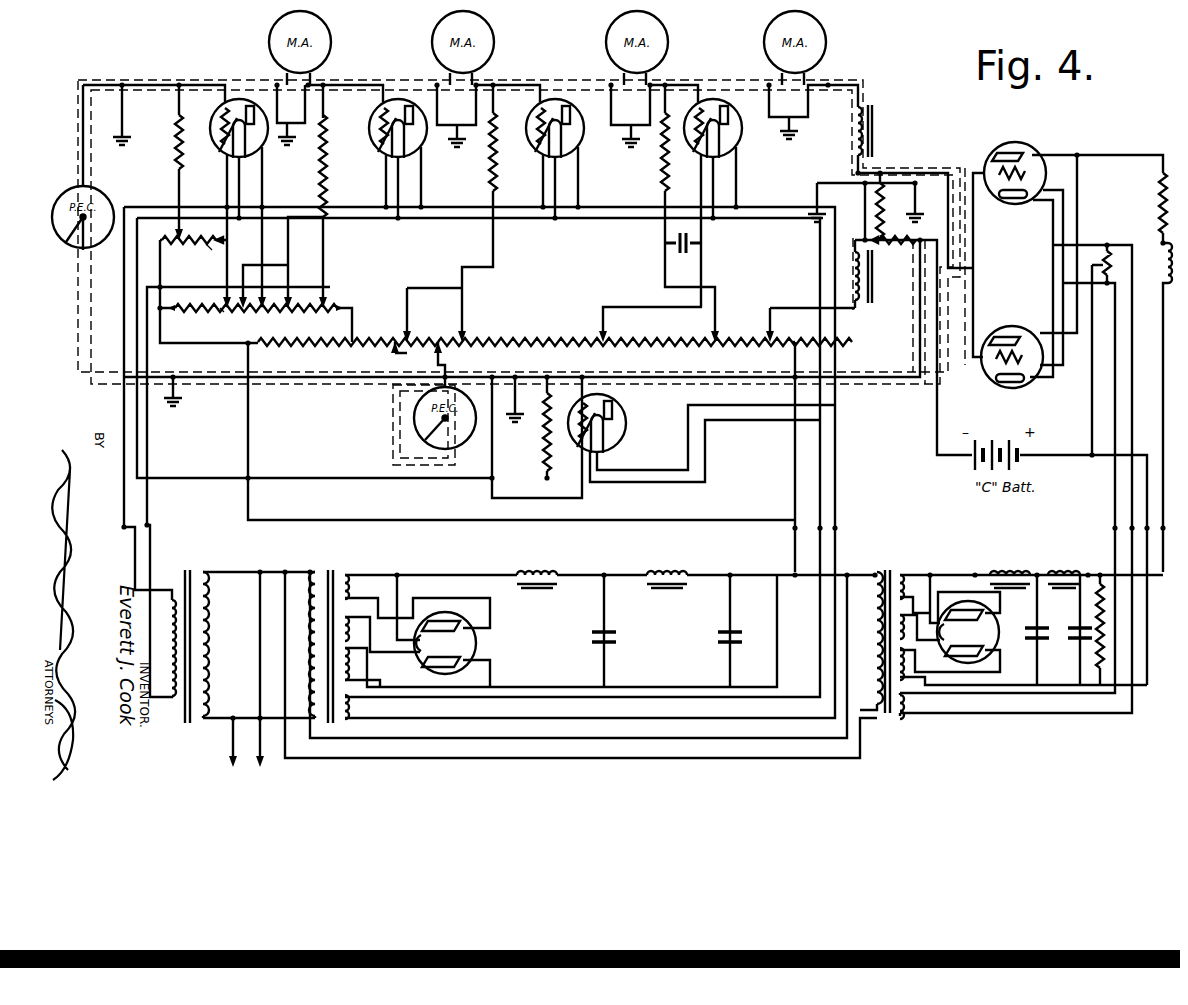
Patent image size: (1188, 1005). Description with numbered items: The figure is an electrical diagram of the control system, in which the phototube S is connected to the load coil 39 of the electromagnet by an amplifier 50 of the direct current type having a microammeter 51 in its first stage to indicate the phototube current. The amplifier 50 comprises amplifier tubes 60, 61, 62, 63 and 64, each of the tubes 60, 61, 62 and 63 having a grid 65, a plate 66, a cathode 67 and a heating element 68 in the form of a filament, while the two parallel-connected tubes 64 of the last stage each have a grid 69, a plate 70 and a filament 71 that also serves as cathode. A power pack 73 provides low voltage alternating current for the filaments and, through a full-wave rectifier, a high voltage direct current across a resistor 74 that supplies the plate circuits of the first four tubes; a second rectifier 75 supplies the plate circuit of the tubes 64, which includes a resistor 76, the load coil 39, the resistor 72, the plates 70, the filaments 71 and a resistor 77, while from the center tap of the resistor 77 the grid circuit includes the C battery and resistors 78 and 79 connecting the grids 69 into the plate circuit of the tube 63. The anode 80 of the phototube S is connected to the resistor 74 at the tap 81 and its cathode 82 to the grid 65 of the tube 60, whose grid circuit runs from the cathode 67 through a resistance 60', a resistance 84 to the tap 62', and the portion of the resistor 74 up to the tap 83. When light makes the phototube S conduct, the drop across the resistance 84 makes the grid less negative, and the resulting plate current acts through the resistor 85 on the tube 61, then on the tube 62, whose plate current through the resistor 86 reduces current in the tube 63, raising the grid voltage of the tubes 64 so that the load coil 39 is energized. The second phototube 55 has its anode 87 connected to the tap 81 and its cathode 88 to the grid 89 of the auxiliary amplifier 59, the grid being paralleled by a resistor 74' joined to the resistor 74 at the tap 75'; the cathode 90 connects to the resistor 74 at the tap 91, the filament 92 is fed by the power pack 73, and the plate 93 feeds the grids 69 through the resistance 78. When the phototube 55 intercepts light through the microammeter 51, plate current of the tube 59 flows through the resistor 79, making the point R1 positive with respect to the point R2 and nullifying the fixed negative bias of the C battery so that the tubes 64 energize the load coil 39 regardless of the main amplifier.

The load coil 39 is at (1158, 287).
The amplifier 50 is at (528, 76).
The microammeter 51 is at (336, 46).
The light sensitive cell 55 is at (468, 435).
The auxiliary amplifier tube 59 is at (628, 430).
The amplifier tube 60 is at (239, 179).
The amplifier tube 61 is at (398, 98).
The amplifier tube 62 is at (555, 135).
The amplifier tube 63 is at (710, 98).
The amplifier tubes 64 is at (1000, 322).
The grid 65 is at (685, 154).
The plate 66 is at (742, 134).
The cathode 67 is at (686, 178).
The heating element 68 is at (742, 168).
The grid 69 is at (986, 349).
The plate 70 is at (1028, 323).
The filament 71 is at (1020, 400).
The resistor 72 is at (1155, 210).
The power pack 73 is at (620, 576).
The resistor 74 is at (552, 339).
The resistor 74' is at (527, 427).
The second rectifier 75 is at (1022, 613).
The tap 75' is at (265, 312).
The resistor 76 is at (1098, 582).
The resistor 77 is at (1106, 243).
The resistor 78 is at (884, 220).
The resistor 79 is at (900, 246).
The anode 80 is at (90, 225).
The tap 81 is at (388, 354).
The cathode 82 is at (117, 188).
The tap 83 is at (232, 308).
The resistance 84 is at (170, 158).
The resistor 85 is at (326, 205).
The resistor 86 is at (660, 186).
The anode 87 is at (420, 431).
The cathode 88 is at (430, 385).
The grid 89 is at (569, 450).
The cathode 90 is at (588, 458).
The tap 91 is at (442, 322).
The filament 92 is at (606, 448).
The plate 93 is at (612, 415).
The phototube S is at (58, 244).
The resistance 60' is at (214, 270).
The tap 62' is at (193, 265).
The point R1 is at (882, 252).
The point R2 is at (912, 252).